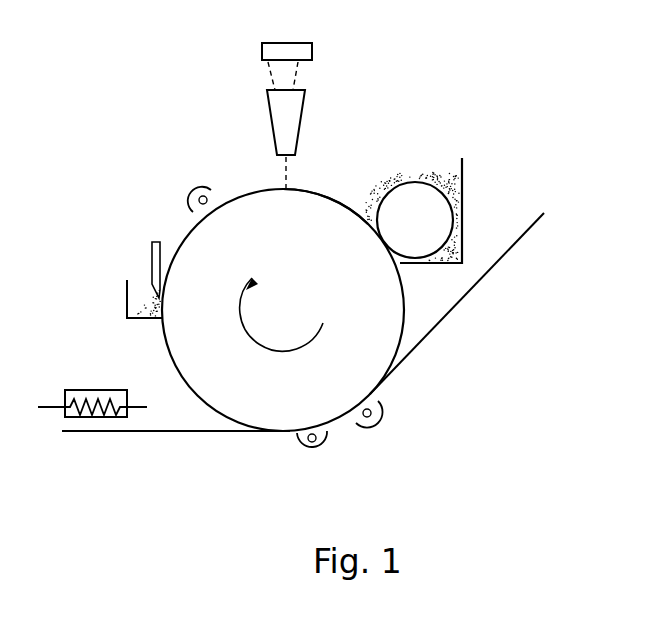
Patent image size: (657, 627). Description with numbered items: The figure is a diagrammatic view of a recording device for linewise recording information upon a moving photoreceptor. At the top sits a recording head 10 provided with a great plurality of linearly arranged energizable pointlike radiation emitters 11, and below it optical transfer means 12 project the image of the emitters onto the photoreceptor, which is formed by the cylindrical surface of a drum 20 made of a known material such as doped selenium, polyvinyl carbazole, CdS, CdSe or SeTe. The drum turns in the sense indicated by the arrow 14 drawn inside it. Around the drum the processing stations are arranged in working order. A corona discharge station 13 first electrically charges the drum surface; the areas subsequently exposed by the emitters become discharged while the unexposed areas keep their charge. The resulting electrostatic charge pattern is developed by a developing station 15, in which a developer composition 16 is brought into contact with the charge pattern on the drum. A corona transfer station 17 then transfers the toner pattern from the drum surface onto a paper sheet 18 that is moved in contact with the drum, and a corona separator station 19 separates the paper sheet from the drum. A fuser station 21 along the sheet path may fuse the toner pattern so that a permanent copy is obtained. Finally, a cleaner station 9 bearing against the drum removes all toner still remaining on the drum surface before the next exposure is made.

The cleaner station 9 is at (148, 298).
The recording head 10 is at (272, 50).
The pointlike radiation emitters 11 is at (295, 62).
The optical transfer means 12 is at (283, 118).
The corona discharge station 13 is at (203, 200).
The arrow 14 is at (293, 353).
The developing station 15 is at (462, 176).
The developer composition 16 is at (426, 177).
The corona transfer station 17 is at (367, 417).
The paper sheet 18 is at (463, 297).
The corona separator station 19 is at (315, 443).
The drum 20 is at (334, 198).
The fuser station 21 is at (98, 390).